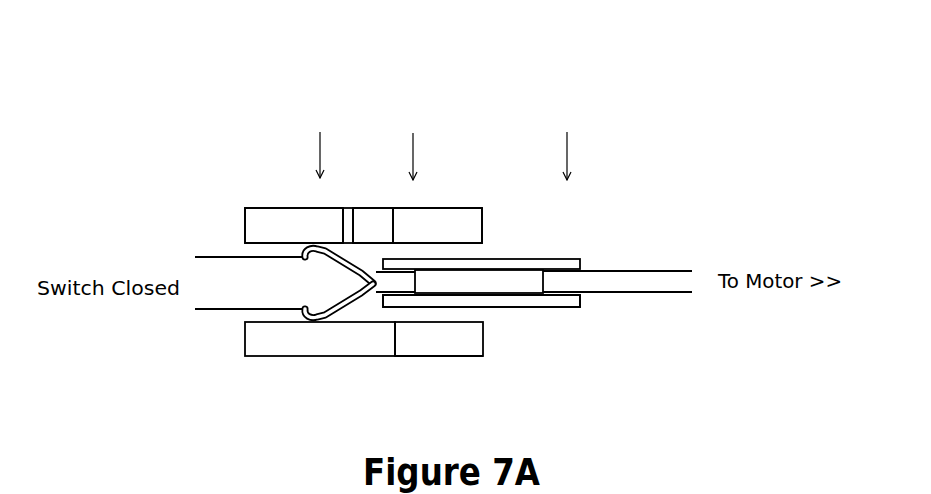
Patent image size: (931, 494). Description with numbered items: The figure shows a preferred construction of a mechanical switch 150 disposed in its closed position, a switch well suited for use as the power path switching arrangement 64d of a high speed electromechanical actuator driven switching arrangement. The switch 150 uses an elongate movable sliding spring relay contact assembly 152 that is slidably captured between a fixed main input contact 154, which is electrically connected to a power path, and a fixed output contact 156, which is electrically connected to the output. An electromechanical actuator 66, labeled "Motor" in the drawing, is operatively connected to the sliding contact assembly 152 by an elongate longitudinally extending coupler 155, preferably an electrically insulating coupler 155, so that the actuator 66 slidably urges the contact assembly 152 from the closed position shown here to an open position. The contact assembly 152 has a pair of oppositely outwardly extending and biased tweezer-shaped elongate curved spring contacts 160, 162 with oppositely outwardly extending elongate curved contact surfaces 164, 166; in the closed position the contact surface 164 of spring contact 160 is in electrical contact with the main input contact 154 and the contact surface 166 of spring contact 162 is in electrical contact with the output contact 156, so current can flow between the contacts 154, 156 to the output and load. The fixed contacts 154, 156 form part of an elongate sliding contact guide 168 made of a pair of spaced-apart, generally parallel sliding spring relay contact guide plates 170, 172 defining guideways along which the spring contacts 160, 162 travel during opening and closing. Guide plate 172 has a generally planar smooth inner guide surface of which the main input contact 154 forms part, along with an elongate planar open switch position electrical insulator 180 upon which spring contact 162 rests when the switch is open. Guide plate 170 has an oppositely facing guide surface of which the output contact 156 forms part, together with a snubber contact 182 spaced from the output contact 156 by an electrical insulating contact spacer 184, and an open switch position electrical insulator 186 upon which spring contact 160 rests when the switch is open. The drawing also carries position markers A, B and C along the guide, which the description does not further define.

The mechanical switch 150 is at (225, 143).
The sliding spring relay contact assembly 152 is at (593, 223).
The main input contact 154 is at (260, 343).
The coupler 155 is at (635, 282).
The output contact 156 is at (265, 223).
The spring contact 160 is at (225, 259).
The spring contact 162 is at (225, 314).
The contact surface 164 is at (315, 243).
The contact surface 166 is at (320, 320).
The sliding contact guide 168 is at (212, 243).
The guide plate 170 is at (473, 207).
The guide plate 172 is at (473, 350).
The open switch position electrical insulator 180 is at (430, 342).
The snubber contact 182 is at (370, 223).
The electrical insulating contact spacer 184 is at (347, 223).
The open switch position electrical insulator 186 is at (426, 220).
The electromechanical actuator 66 is at (775, 297).
The power path switching arrangement 64d is at (572, 348).
The direction A is at (320, 144).
The direction B is at (412, 146).
The direction C is at (566, 145).